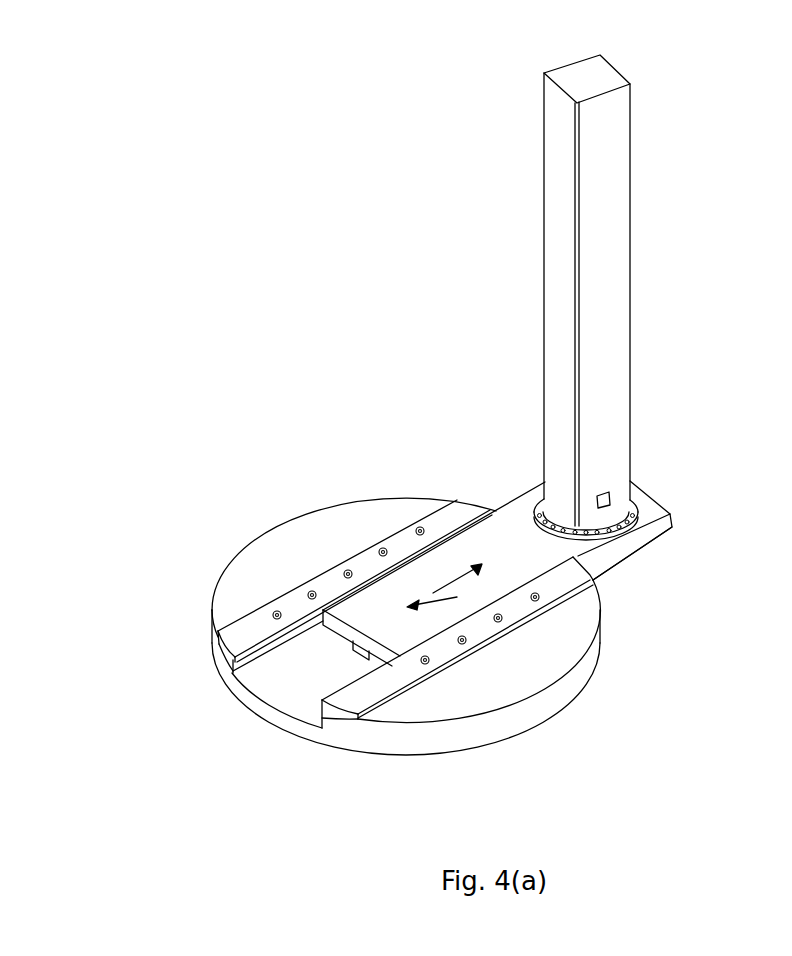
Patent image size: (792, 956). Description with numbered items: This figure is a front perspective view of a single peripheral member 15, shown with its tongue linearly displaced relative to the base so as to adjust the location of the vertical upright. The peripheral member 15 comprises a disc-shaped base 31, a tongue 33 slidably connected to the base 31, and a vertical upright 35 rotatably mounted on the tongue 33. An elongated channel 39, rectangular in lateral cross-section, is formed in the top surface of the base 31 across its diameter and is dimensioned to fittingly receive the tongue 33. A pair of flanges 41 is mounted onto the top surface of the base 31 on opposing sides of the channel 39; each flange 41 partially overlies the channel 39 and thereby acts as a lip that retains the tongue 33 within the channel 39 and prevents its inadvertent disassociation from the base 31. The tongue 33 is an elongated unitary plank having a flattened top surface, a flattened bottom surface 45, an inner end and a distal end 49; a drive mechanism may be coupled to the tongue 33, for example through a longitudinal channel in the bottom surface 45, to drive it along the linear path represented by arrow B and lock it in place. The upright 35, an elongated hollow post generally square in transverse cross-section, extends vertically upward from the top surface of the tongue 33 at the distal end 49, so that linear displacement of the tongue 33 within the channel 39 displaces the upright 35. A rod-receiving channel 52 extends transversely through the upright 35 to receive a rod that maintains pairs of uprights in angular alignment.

The peripheral member 15 is at (619, 747).
The disc-shaped base 31 is at (299, 516).
The tongue 33 is at (507, 528).
The vertical upright 35 is at (555, 270).
The channel 39 is at (277, 703).
The flange 41 is at (242, 630).
The bottom surface 45 is at (610, 563).
The distal end 49 is at (652, 496).
The rod-receiving channel 52 is at (605, 500).